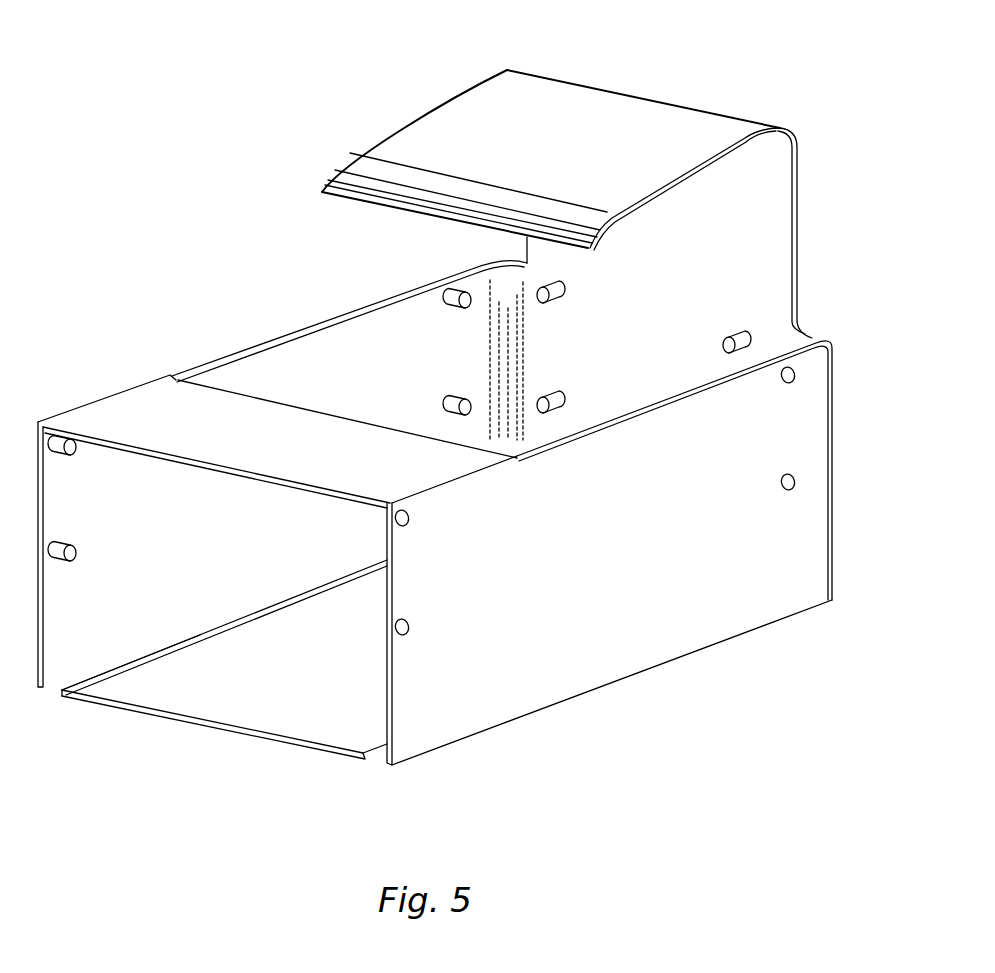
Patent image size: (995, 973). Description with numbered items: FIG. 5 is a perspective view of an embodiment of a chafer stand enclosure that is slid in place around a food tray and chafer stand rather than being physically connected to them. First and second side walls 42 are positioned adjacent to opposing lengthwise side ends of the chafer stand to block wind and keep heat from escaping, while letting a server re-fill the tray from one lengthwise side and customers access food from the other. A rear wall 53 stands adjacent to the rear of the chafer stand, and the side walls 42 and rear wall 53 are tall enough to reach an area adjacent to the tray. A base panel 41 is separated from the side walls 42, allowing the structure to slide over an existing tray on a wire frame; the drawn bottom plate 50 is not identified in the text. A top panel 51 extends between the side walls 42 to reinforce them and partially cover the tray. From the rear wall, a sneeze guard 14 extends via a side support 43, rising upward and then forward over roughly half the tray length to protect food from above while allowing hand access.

The sneeze guard 14 is at (629, 147).
The base panel 41 is at (152, 680).
The side walls 42 is at (297, 398).
The side support 43 is at (797, 203).
The bottom plate 50 is at (298, 632).
The top panel 51 is at (193, 418).
The rear wall 53 is at (648, 372).